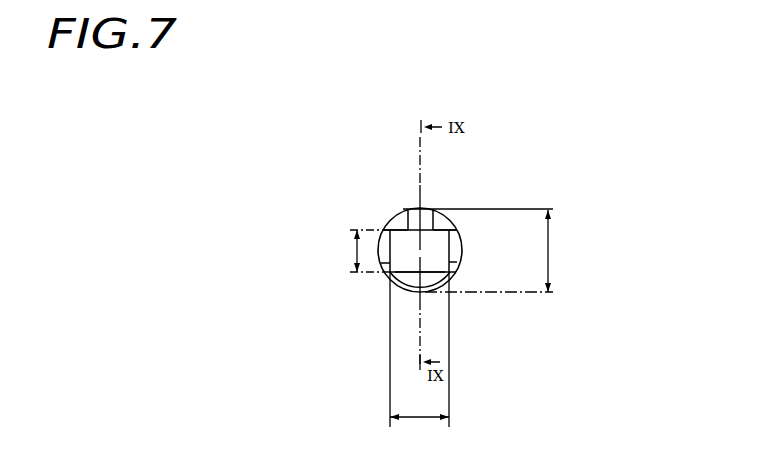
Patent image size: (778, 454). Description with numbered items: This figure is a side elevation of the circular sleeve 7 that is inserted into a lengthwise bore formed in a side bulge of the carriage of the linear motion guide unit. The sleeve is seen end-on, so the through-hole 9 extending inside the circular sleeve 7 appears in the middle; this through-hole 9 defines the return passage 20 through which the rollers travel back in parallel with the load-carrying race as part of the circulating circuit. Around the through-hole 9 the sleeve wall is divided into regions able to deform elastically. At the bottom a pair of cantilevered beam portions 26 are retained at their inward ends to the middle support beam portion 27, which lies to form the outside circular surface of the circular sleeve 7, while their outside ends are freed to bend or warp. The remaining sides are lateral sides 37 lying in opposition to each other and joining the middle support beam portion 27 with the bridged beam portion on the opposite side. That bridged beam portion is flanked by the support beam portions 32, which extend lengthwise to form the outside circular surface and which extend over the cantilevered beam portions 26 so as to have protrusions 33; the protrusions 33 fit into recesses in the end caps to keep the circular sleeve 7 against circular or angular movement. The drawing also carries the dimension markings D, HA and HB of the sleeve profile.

The circular sleeve 7 is at (446, 206).
The through-hole 9 is at (433, 258).
The return passage 20 is at (405, 243).
The cantilevered beam portion 26 is at (411, 281).
The middle support beam portion 27 is at (429, 284).
The support beam portion 32 is at (398, 222).
The protrusion 33 is at (422, 217).
The lateral side 37 is at (388, 248).
The diameter D is at (558, 251).
The height HA is at (356, 258).
The width HB is at (419, 360).